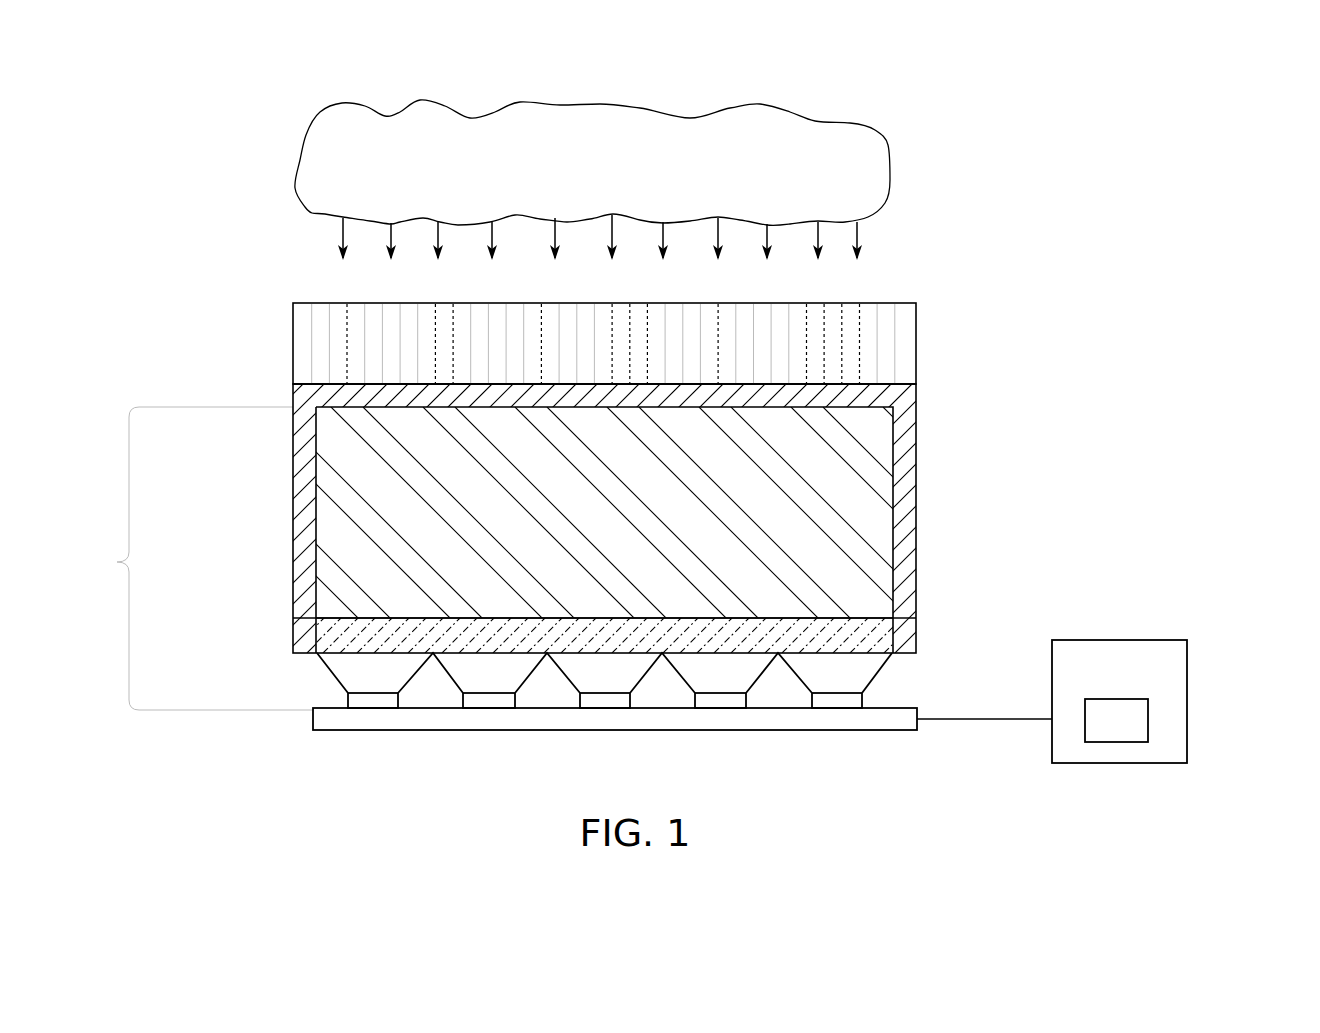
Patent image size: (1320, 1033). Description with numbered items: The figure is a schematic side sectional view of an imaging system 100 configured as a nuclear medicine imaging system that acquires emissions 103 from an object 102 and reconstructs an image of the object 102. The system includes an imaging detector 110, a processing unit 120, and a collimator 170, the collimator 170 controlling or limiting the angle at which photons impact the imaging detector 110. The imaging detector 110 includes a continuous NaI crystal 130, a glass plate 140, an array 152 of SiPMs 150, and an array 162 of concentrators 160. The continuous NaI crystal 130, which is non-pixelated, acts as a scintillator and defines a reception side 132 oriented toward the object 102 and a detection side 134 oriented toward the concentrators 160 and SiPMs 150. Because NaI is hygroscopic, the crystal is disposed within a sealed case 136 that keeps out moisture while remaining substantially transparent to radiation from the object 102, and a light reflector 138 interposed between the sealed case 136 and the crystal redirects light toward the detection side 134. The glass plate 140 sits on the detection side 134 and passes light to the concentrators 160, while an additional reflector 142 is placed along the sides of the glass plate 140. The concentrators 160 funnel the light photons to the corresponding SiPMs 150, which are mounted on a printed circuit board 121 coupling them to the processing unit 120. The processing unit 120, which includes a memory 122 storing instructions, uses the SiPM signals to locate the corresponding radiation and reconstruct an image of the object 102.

The imaging system 100 is at (1024, 63).
The object 102 is at (590, 167).
The emissions 103 is at (874, 229).
The imaging detector 110 is at (117, 562).
The processing unit 120 is at (1190, 660).
The printed circuit board 121 is at (885, 732).
The memory 122 is at (1148, 720).
The continuous NaI crystal 130 is at (880, 537).
The reception side 132 is at (290, 413).
The detection side 134 is at (290, 636).
The sealed case 136 is at (918, 455).
The light reflector 138 is at (907, 418).
The glass plate 140 is at (872, 625).
The additional reflector 142 is at (918, 625).
The SiPM 150 is at (718, 700).
The array of SiPMs 152 is at (890, 699).
The concentrator 160 is at (690, 670).
The array of concentrators 162 is at (886, 676).
The collimator 170 is at (918, 340).